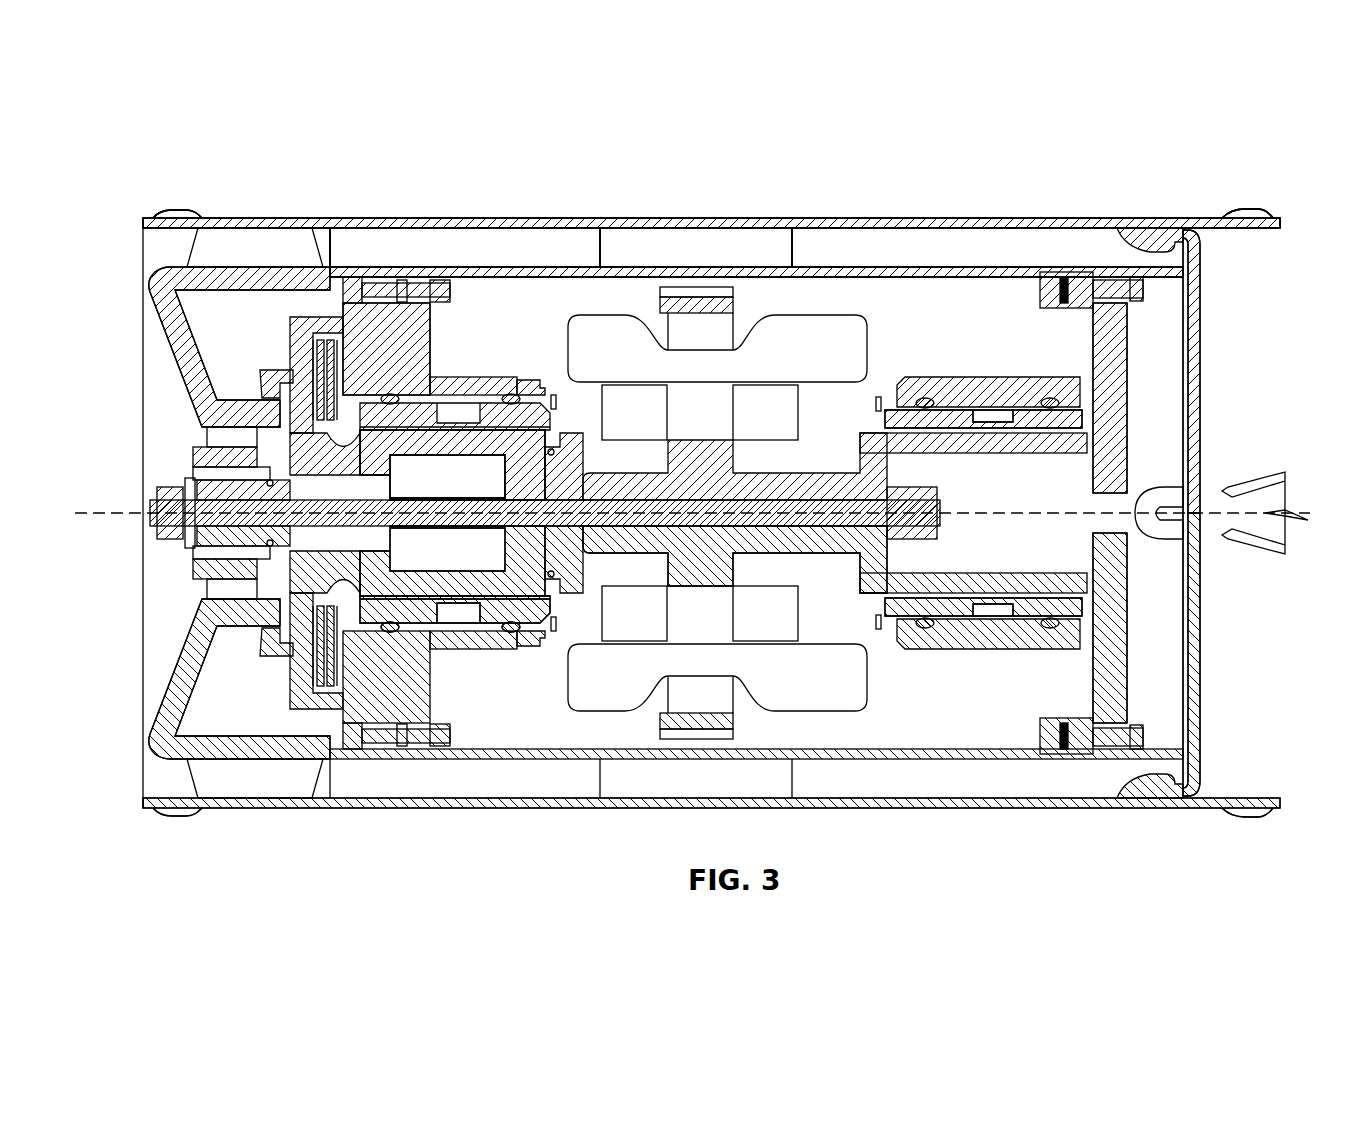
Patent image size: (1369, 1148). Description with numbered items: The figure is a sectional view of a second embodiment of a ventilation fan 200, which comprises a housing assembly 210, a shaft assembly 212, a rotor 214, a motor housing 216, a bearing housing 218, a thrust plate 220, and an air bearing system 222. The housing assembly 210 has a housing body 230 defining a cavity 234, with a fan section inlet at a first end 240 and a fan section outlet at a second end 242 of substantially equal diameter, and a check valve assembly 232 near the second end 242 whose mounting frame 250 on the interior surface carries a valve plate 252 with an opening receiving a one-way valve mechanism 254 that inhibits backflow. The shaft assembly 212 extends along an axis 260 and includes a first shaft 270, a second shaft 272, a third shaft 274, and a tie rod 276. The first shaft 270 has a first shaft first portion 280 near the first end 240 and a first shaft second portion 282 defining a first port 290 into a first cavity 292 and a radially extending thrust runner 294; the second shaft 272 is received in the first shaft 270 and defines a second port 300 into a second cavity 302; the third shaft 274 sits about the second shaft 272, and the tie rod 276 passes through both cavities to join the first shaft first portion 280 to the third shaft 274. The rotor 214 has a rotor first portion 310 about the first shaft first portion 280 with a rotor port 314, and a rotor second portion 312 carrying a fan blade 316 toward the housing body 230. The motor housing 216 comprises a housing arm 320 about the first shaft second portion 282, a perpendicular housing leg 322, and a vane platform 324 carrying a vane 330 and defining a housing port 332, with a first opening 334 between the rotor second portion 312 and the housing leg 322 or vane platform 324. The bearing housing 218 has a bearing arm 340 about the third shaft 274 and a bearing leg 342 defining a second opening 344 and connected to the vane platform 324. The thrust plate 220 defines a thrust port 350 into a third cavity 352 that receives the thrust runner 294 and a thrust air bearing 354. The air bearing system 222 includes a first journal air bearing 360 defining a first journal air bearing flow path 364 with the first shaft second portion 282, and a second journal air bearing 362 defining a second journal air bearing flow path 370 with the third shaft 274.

The ventilation fan 200 is at (143, 152).
The housing assembly 210 is at (1214, 208).
The shaft assembly 212 is at (166, 548).
The rotor 214 is at (165, 665).
The motor housing 216 is at (480, 290).
The bearing housing 218 is at (1082, 352).
The thrust plate 220 is at (272, 364).
The air bearing system 222 is at (557, 418).
The housing body 230 is at (665, 225).
The check valve assembly 232 is at (1208, 270).
The cavity 234 is at (473, 240).
The first end 240 is at (158, 218).
The second end 242 is at (1268, 224).
The mounting frame 250 is at (1137, 237).
The valve plate 252 is at (1197, 345).
The valve mechanism 254 is at (1212, 557).
The axis 260 is at (115, 525).
The first shaft 270 is at (377, 467).
The second shaft 272 is at (688, 480).
The third shaft 274 is at (1027, 450).
The tie rod 276 is at (393, 530).
The first shaft first portion 280 is at (175, 578).
The first shaft second portion 282 is at (420, 453).
The first port 290 is at (317, 470).
The first cavity 292 is at (487, 600).
The thrust runner 294 is at (323, 368).
The second port 300 is at (583, 478).
The second cavity 302 is at (597, 527).
The rotor first portion 310 is at (218, 433).
The rotor second portion 312 is at (163, 292).
The rotor port 314 is at (195, 455).
The fan blade 316 is at (230, 240).
The housing arm 320 is at (480, 397).
The housing leg 322 is at (405, 345).
The vane platform 324 is at (523, 270).
The vane 330 is at (760, 240).
The housing port 332 is at (738, 293).
The first opening 334 is at (340, 277).
The bearing arm 340 is at (983, 387).
The bearing leg 342 is at (1120, 343).
The second opening 344 is at (1125, 530).
The thrust port 350 is at (290, 332).
The third cavity 352 is at (325, 335).
The thrust air bearing 354 is at (327, 397).
The first journal air bearing 360 is at (527, 387).
The second journal air bearing 362 is at (957, 417).
The first journal air bearing flow path 364 is at (497, 490).
The second journal air bearing flow path 370 is at (955, 430).